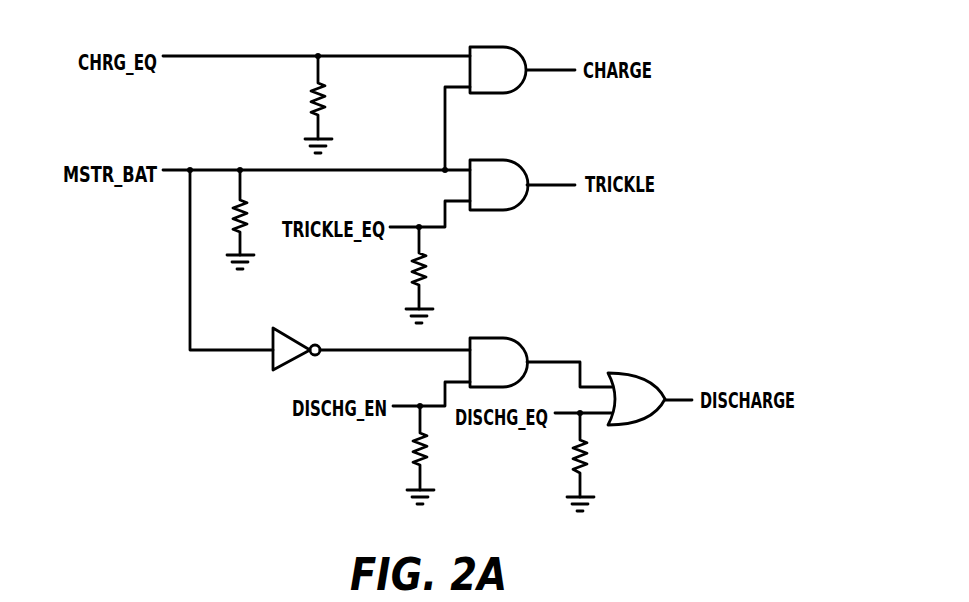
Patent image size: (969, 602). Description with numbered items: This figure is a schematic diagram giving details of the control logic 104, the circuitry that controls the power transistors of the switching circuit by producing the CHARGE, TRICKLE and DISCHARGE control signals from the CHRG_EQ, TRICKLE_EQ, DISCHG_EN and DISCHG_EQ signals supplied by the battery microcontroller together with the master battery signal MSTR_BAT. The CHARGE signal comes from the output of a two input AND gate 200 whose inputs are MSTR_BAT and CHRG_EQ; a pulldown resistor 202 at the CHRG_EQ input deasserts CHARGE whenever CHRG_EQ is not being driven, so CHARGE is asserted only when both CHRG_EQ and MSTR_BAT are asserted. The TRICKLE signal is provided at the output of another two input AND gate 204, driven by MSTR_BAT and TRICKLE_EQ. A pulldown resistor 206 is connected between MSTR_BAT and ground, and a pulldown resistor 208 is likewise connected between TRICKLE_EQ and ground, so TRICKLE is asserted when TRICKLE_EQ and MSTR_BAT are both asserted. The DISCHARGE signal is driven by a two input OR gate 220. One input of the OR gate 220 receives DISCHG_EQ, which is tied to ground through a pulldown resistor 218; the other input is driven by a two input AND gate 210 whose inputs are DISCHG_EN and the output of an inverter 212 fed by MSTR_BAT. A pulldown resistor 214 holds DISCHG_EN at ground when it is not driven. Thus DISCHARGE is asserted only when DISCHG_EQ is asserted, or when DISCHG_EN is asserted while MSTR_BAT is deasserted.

The control logic 104 is at (742, 88).
The two input AND gate 200 is at (500, 47).
The pulldown resistor 202 is at (323, 96).
The two input AND gate 204 is at (500, 160).
The pulldown resistor 206 is at (245, 202).
The pulldown resistor 208 is at (424, 271).
The two input AND gate 210 is at (500, 338).
The inverter 212 is at (290, 340).
The pulldown resistor 214 is at (425, 452).
The pulldown resistor 218 is at (585, 460).
The two input OR gate 220 is at (640, 375).